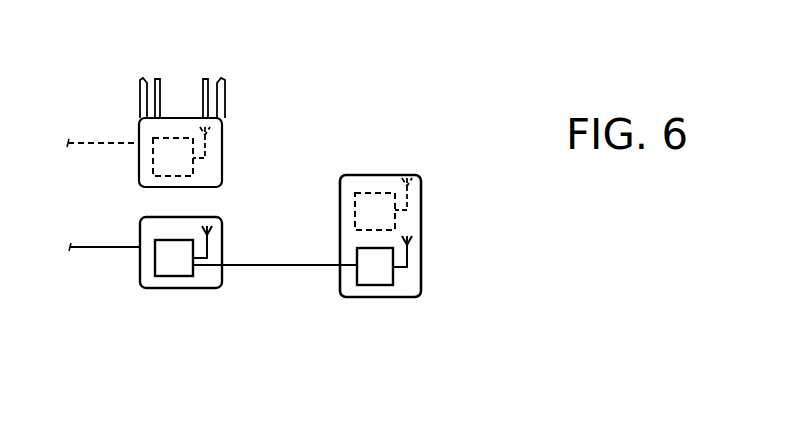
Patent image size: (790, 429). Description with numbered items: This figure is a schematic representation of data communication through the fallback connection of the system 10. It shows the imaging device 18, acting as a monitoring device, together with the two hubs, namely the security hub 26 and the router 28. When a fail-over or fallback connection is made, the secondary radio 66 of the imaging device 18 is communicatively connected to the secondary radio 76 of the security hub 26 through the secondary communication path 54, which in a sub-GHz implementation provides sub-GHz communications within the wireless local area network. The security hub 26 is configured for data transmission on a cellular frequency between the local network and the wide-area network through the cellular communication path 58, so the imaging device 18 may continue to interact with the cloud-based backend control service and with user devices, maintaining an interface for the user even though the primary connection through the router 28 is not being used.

The system 10 is at (329, 120).
The router 28 is at (223, 97).
The security hub 26 is at (140, 273).
The secondary radio 76 is at (178, 277).
The cellular communication path 58 is at (90, 244).
The secondary communication path 54 is at (288, 268).
The imaging device 18 is at (421, 208).
The secondary radio 66 is at (375, 286).